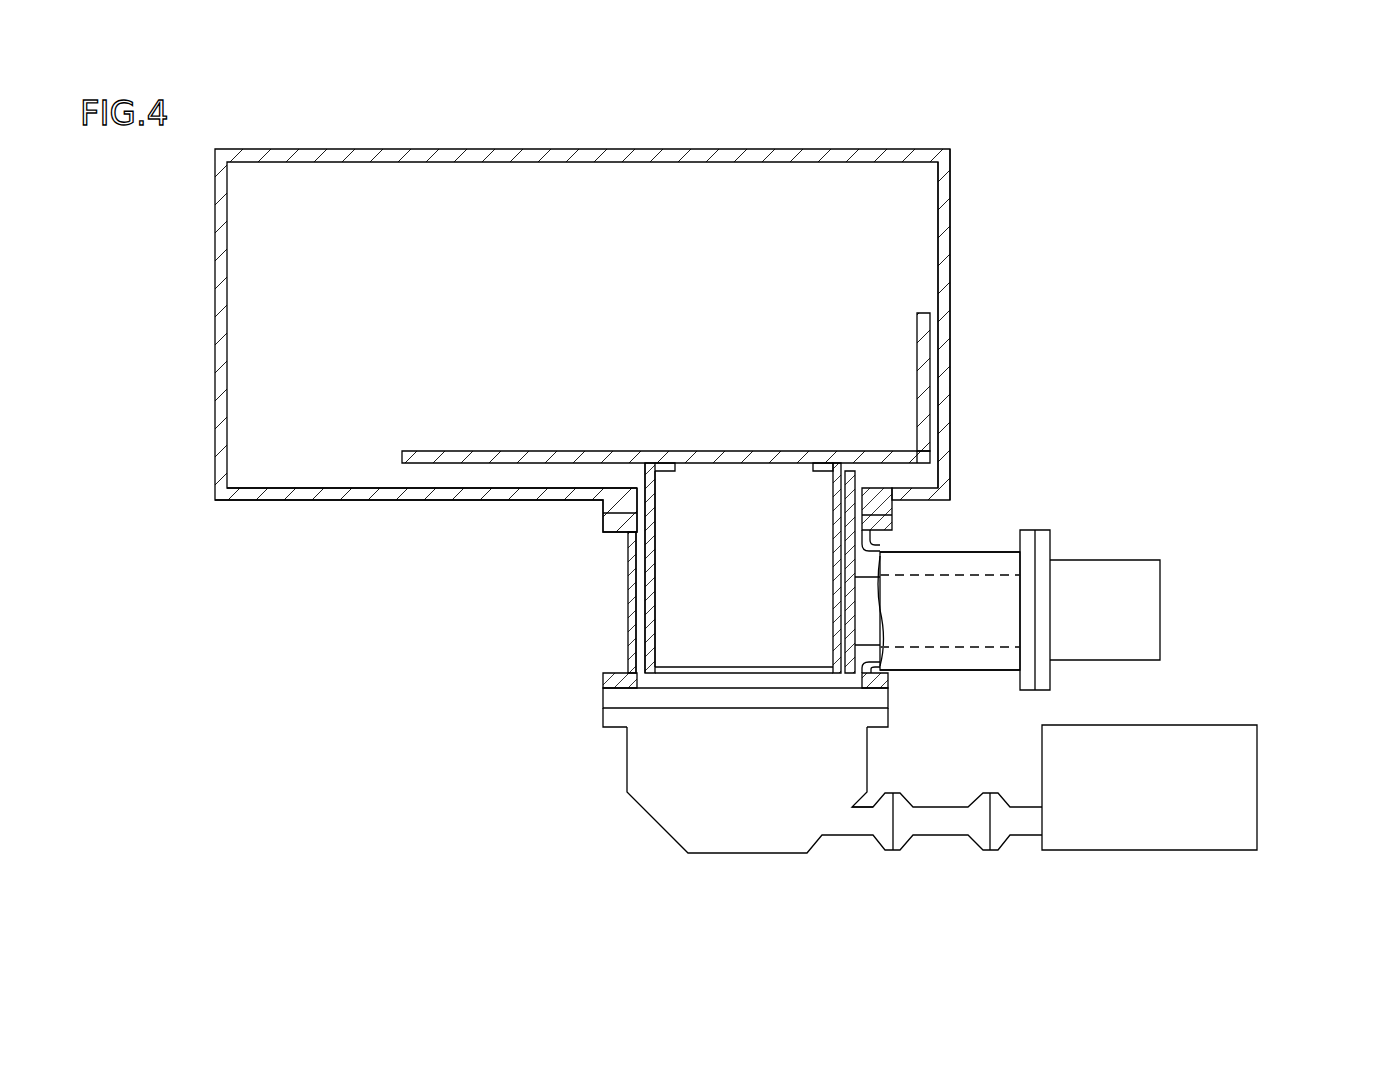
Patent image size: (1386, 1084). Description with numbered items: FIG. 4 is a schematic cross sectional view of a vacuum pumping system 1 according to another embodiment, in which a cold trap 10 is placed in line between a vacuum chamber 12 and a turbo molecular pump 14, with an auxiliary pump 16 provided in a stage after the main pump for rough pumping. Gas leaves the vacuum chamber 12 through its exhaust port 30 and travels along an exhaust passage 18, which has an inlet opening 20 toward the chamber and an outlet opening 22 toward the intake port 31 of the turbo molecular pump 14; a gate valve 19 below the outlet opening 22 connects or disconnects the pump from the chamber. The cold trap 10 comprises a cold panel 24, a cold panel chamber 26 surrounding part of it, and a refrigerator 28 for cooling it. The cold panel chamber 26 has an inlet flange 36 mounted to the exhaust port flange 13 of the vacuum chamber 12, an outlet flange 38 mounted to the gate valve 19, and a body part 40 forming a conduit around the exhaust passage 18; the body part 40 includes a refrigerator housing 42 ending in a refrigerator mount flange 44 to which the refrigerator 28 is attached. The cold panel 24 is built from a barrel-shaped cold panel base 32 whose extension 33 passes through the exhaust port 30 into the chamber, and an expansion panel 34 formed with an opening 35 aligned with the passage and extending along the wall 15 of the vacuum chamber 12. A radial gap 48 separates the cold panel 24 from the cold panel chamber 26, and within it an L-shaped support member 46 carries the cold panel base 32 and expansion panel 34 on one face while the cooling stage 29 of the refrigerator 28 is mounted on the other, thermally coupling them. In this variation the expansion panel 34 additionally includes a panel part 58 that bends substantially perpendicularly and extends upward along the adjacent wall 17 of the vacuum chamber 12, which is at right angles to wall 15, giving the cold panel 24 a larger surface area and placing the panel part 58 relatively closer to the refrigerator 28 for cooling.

The vacuum pumping system 1 is at (714, 906).
The cold trap 10 is at (1080, 487).
The vacuum chamber 12 is at (850, 148).
The exhaust port flange 13 is at (627, 482).
The turbo molecular pump 14 is at (648, 815).
The wall 15 is at (505, 498).
The auxiliary pump 16 is at (1260, 828).
The wall 17 is at (952, 342).
The exhaust passage 18 is at (690, 612).
The gate valve 19 is at (892, 702).
The inlet opening 20 is at (697, 522).
The outlet opening 22 is at (680, 677).
The cold panel 24 is at (763, 366).
The cold panel chamber 26 is at (626, 636).
The refrigerator 28 is at (1160, 603).
The cooling stage 29 is at (856, 652).
The exhaust port 30 is at (699, 488).
The intake port 31 is at (782, 720).
The cold panel base 32 is at (833, 490).
The extension 33 is at (683, 490).
The expansion panel 34 is at (845, 478).
The opening 35 is at (738, 452).
The inlet flange 36 is at (891, 516).
The outlet flange 38 is at (895, 680).
The body part 40 is at (628, 575).
The refrigerator housing 42 is at (978, 550).
The refrigerator mount flange 44 is at (1027, 530).
The support member 46 is at (856, 608).
The radial gap 48 is at (862, 485).
The panel part 58 is at (921, 312).